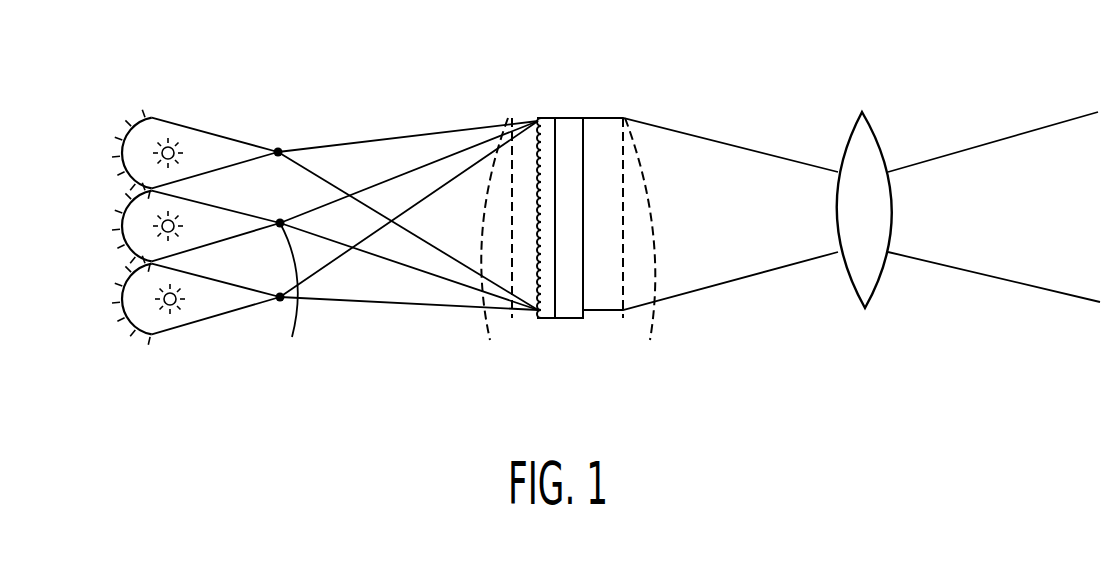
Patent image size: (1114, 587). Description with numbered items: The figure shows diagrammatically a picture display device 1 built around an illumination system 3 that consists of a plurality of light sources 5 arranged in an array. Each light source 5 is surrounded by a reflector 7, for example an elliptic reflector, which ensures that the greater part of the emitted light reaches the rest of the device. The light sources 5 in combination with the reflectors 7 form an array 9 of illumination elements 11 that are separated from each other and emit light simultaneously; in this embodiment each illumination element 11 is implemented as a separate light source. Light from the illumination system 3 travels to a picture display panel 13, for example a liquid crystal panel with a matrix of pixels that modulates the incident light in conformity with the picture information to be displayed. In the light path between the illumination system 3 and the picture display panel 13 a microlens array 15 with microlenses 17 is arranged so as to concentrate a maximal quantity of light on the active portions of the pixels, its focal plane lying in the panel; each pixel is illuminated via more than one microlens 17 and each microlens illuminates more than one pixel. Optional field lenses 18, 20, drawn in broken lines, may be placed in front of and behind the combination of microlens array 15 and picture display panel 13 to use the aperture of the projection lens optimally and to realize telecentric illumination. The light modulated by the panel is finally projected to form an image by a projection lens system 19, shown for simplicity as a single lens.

The picture display device 1 is at (114, 457).
The illumination system 3 is at (137, 358).
The light source 5 is at (178, 152).
The reflector 7 is at (130, 180).
The array of illumination elements 9 is at (277, 120).
The illumination element 11 is at (280, 297).
The picture display panel 13 is at (577, 318).
The microlens array 15 is at (550, 318).
The microlens 17 is at (535, 128).
The field lens 18 is at (495, 243).
The projection lens system 19 is at (858, 278).
The field lens 20 is at (642, 243).